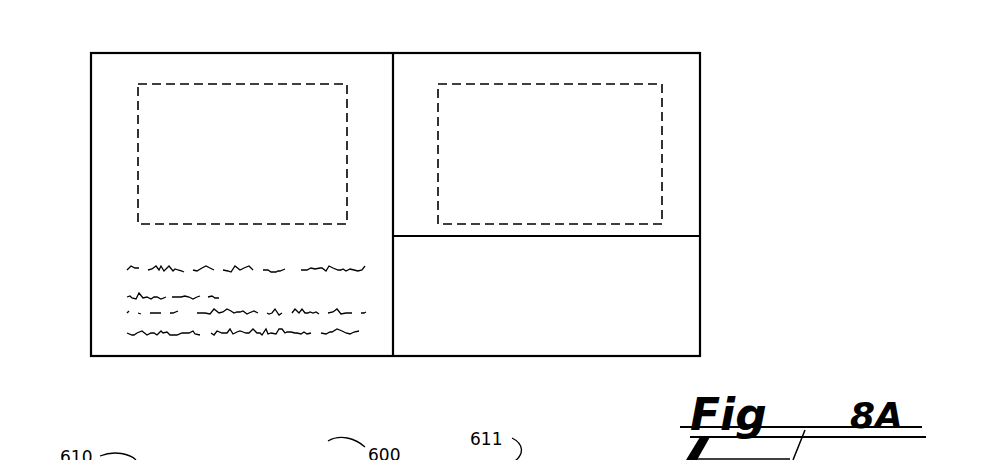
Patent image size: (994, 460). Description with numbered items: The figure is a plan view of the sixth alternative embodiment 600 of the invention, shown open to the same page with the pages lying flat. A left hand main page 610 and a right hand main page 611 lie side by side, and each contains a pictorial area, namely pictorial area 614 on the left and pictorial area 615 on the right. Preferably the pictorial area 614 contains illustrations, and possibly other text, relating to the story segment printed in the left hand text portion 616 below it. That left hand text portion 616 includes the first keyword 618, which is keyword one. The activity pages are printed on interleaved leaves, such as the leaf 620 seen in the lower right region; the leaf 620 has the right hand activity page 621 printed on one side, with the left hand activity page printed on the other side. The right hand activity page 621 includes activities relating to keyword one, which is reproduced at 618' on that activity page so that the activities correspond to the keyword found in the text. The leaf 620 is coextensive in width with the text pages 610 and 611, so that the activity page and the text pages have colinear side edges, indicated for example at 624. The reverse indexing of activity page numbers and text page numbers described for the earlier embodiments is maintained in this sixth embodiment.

The sixth alternative embodiment 600 is at (257, 40).
The left hand main page 610 is at (122, 70).
The right hand main page 611 is at (449, 68).
The pictorial area 614 is at (262, 157).
The pictorial area 615 is at (585, 156).
The left hand text portion 616 is at (110, 278).
The first keyword 618 is at (303, 346).
The reproduced keyword 618' is at (522, 341).
The leaf 620 is at (681, 236).
The right hand activity page 621 is at (672, 272).
The colinear side edges 624 is at (708, 276).